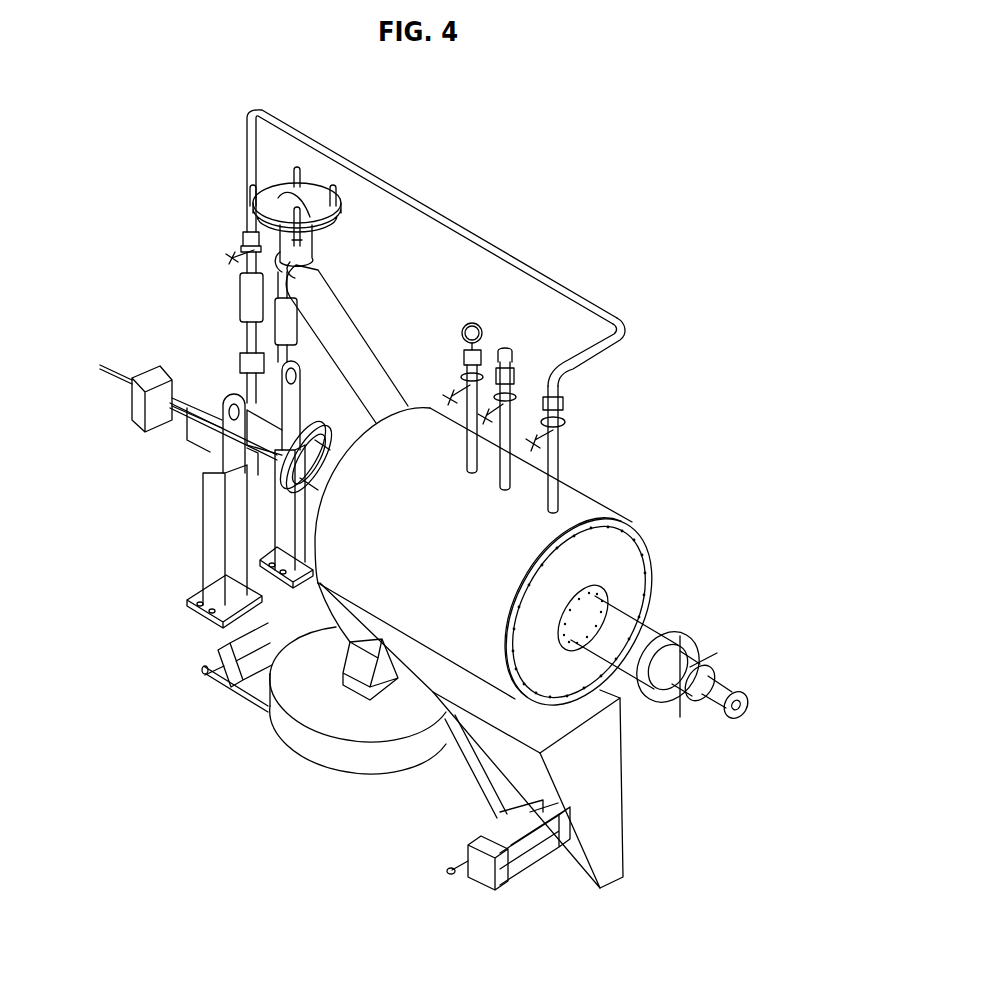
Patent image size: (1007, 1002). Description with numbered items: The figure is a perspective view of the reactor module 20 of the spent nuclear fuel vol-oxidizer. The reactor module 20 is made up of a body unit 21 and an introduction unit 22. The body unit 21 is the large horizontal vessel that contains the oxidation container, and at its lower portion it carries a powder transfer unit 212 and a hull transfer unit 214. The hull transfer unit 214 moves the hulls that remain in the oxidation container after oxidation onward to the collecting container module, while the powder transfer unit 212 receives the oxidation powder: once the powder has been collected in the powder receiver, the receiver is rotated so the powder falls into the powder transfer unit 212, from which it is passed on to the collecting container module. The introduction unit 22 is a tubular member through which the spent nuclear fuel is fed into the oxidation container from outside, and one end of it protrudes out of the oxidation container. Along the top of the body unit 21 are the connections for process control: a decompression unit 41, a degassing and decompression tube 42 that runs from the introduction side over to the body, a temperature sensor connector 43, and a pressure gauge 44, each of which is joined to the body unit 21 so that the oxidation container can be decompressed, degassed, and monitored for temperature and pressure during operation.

The reactor module 20 is at (312, 542).
The body unit 21 is at (585, 508).
The powder transfer unit 212 is at (597, 798).
The hull transfer unit 214 is at (338, 720).
The introduction unit 22 is at (350, 333).
The decompression unit 41 is at (553, 447).
The degassing and decompression tube 42 is at (521, 262).
The temperature sensor connector 43 is at (508, 425).
The pressure gauge 44 is at (462, 410).